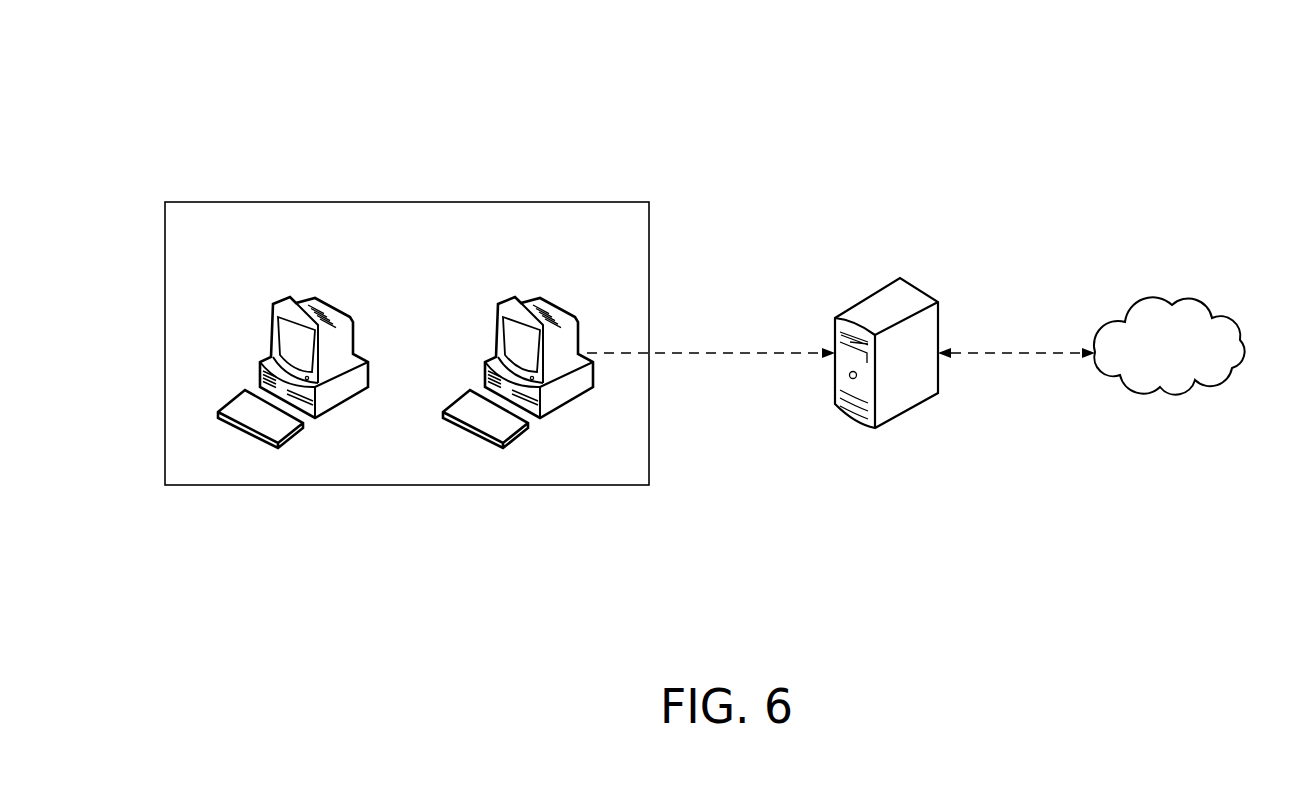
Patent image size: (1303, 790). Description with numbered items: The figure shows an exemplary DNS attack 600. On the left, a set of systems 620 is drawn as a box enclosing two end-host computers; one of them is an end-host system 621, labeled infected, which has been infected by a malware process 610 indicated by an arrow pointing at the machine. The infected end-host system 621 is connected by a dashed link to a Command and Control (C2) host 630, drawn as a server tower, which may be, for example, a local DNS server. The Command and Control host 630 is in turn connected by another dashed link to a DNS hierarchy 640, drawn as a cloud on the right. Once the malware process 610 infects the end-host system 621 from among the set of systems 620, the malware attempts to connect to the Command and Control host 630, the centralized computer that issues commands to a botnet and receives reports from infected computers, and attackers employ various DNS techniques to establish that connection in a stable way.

The DNS attack 600 is at (1170, 44).
The malware process 610 is at (560, 340).
The set of systems 620 is at (248, 180).
The end-host system 621 is at (470, 322).
The Command and Control (C2) host 630 is at (920, 270).
The DNS hierarchy 640 is at (1194, 358).